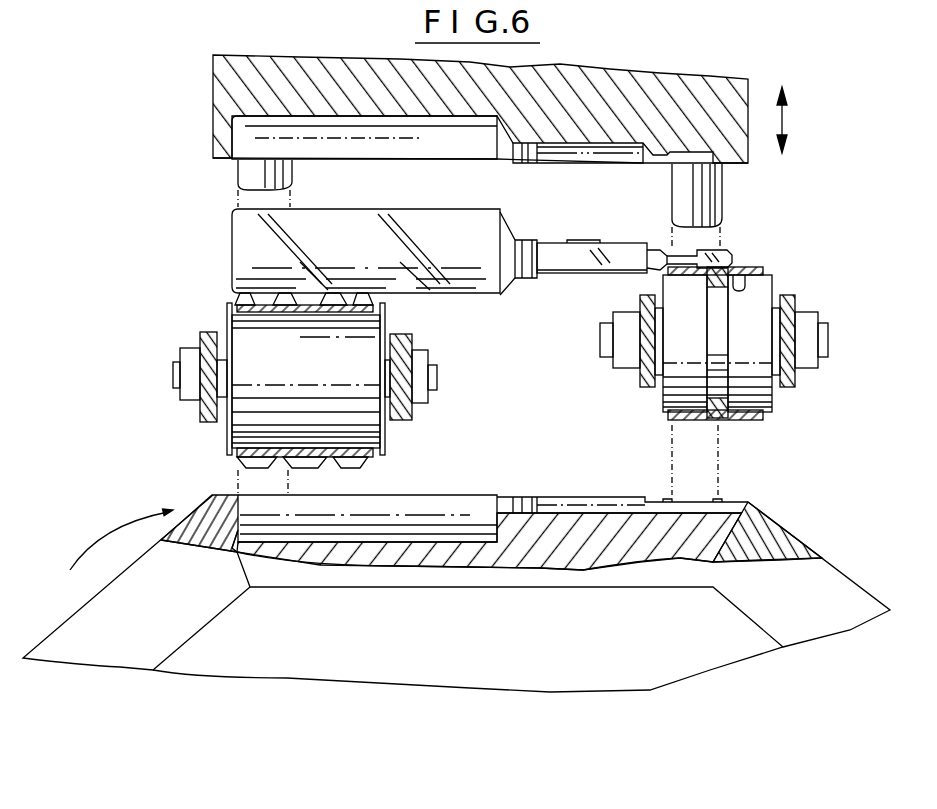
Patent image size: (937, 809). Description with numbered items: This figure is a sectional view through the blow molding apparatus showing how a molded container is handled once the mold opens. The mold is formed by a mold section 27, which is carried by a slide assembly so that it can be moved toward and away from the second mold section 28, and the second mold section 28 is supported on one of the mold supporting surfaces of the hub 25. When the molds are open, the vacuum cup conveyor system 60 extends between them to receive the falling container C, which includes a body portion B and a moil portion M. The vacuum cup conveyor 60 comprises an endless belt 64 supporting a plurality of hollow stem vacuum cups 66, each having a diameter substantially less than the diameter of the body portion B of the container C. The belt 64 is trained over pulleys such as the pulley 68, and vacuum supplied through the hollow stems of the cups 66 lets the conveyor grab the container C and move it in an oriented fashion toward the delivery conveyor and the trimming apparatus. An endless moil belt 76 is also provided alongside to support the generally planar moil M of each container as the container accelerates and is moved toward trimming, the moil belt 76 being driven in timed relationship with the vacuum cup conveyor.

The hub 25 is at (533, 677).
The mold section 27 is at (642, 92).
The second mold section 28 is at (525, 577).
The vacuum cup conveyor system 60 is at (296, 364).
The endless belt 64 is at (237, 452).
The hollow stem vacuum cups 66 is at (237, 295).
The pulley 68 is at (352, 343).
The endless belt 76 is at (742, 287).
The body portion B is at (384, 252).
The container C is at (482, 233).
The moil portion M is at (621, 252).